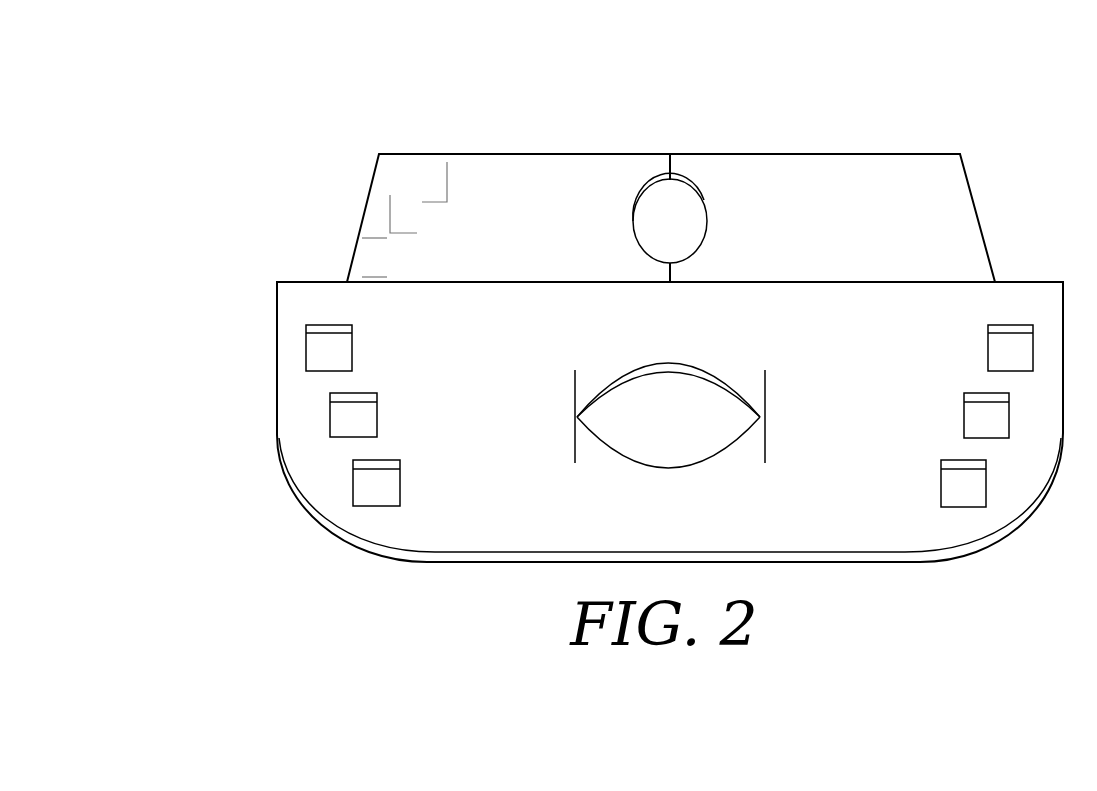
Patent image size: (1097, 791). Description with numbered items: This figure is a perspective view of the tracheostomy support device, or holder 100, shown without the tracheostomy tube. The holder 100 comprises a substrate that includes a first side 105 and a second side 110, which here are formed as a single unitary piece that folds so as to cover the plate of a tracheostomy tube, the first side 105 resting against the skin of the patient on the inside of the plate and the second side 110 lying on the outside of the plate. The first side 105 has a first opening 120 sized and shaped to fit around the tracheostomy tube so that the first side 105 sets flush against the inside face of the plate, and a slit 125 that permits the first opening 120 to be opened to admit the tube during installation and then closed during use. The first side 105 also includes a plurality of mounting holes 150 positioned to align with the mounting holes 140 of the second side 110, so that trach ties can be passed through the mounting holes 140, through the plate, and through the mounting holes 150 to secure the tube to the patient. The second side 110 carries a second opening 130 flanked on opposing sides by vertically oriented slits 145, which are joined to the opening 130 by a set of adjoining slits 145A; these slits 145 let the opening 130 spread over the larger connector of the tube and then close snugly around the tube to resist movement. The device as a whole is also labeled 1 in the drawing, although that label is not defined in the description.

The holder 100 is at (1013, 84).
The bib garment 1 is at (807, 154).
The first side 105 is at (671, 218).
The second side 110 is at (618, 422).
The first opening 120 is at (685, 230).
The slit 125 is at (673, 158).
The second opening 130 is at (687, 393).
The mounting holes 140 is at (363, 478).
The slits 145 is at (765, 408).
The adjoining slits 145A is at (580, 415).
The mounting holes 150 is at (433, 182).